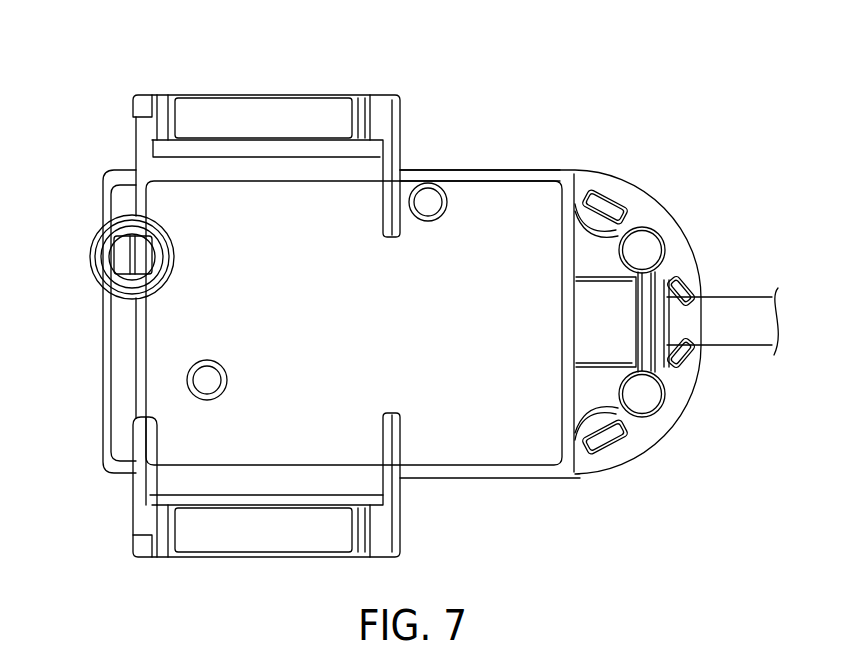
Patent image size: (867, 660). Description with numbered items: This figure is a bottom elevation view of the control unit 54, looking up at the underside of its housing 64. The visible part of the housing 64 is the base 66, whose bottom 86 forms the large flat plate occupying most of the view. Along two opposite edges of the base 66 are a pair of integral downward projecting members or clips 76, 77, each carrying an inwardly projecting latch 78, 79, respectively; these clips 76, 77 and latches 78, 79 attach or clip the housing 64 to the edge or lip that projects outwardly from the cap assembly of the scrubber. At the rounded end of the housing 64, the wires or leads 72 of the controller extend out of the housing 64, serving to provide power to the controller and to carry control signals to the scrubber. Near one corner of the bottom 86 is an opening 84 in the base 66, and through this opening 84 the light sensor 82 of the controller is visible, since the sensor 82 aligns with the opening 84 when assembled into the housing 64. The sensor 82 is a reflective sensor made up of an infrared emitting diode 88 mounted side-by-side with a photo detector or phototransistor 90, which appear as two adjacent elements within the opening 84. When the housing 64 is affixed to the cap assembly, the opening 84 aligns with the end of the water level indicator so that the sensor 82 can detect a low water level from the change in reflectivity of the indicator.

The control unit 54 is at (537, 162).
The housing 64 is at (541, 488).
The base 66 is at (468, 200).
The wires or leads 72 is at (732, 313).
The clip 76 is at (147, 104).
The clip 77 is at (138, 522).
The latch 78 is at (230, 117).
The latch 79 is at (231, 537).
The light sensor 82 is at (133, 240).
The opening 84 is at (104, 262).
The bottom 86 is at (485, 329).
The infrared emitting diode 88 is at (121, 259).
The photo detector or phototransistor 90 is at (141, 262).